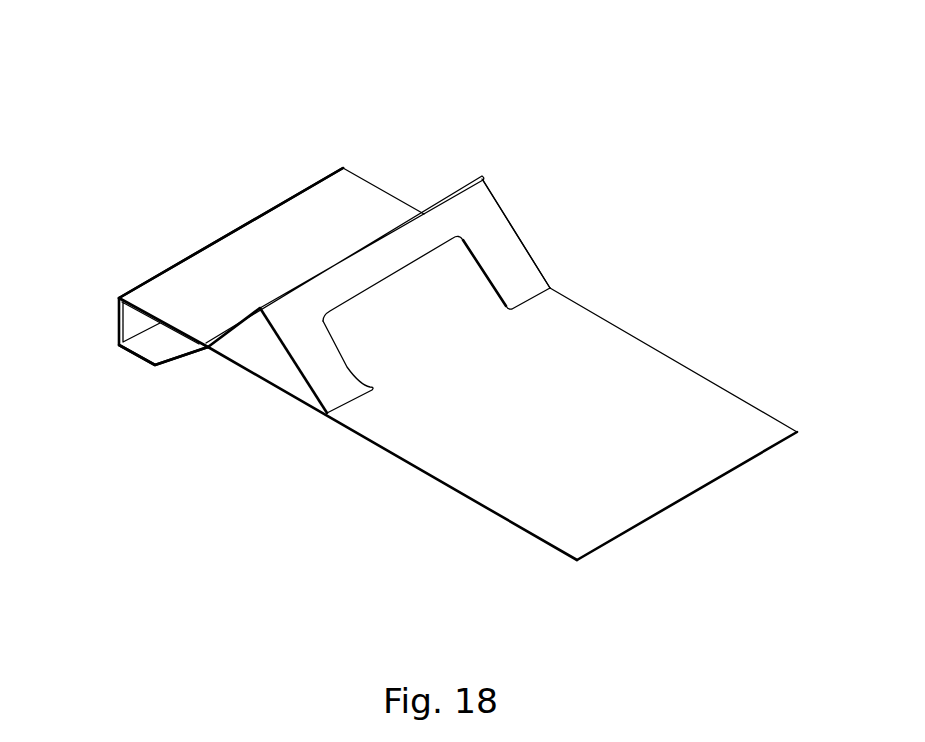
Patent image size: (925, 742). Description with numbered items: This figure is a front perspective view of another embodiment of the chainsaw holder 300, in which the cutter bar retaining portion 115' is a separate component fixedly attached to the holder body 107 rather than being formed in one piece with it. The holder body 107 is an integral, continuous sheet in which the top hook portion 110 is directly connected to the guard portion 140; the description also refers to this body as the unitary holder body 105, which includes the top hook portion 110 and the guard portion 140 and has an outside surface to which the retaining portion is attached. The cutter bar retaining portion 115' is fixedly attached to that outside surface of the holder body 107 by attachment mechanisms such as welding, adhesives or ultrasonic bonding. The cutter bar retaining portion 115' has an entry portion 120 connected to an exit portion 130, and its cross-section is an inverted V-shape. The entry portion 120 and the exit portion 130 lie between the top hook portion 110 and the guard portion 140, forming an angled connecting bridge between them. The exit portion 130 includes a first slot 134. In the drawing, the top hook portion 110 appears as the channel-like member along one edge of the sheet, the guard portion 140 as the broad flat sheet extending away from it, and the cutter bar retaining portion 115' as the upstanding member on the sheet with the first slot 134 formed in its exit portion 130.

The unitary holder body 105 is at (290, 397).
The integral holder body 107 is at (458, 492).
The top hook portion 110 is at (120, 342).
The cutter bar retaining portion 115' is at (531, 213).
The entry portion 120 is at (208, 347).
The exit portion 130 is at (505, 253).
The first slot 134 is at (347, 367).
The guard portion 140 is at (658, 448).
The chainsaw holder 300 is at (200, 143).